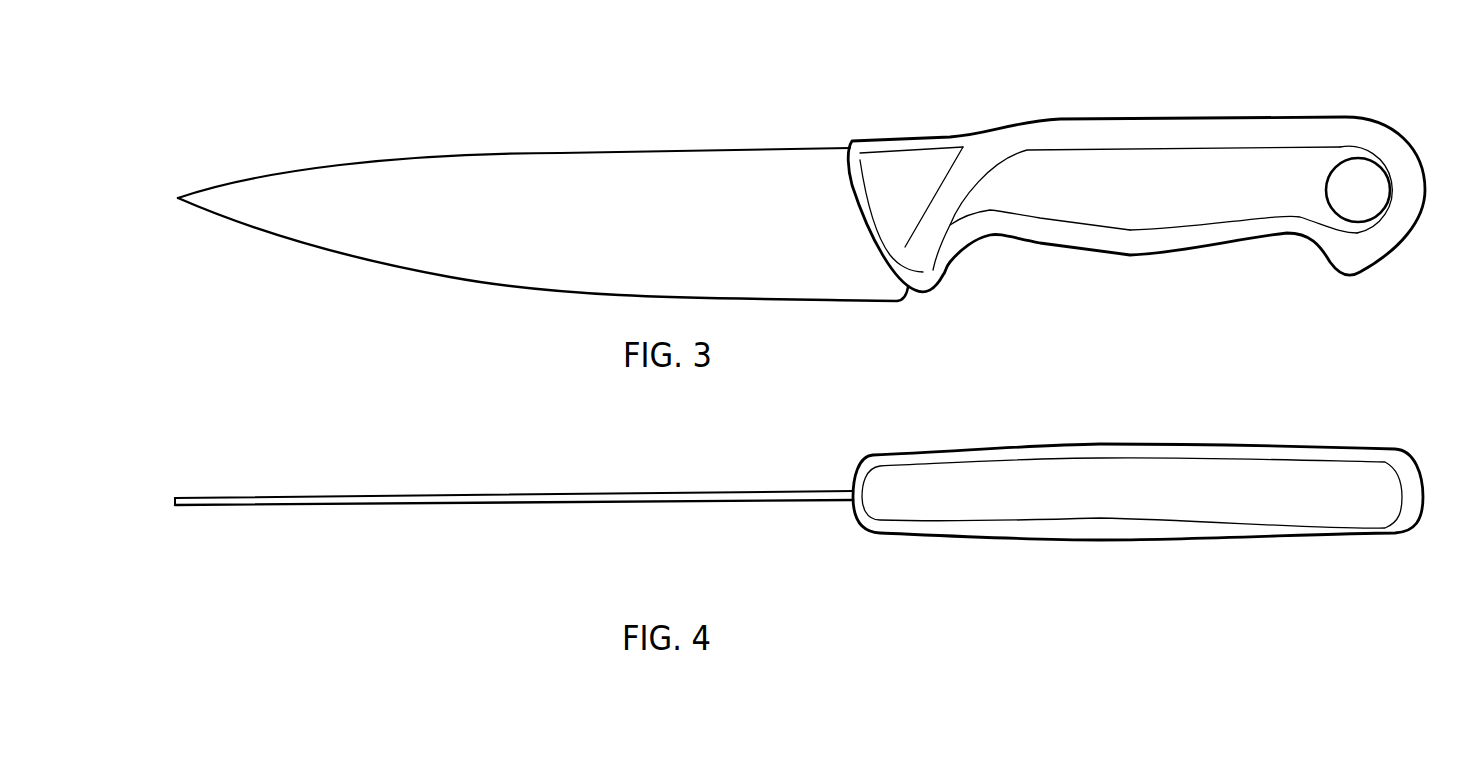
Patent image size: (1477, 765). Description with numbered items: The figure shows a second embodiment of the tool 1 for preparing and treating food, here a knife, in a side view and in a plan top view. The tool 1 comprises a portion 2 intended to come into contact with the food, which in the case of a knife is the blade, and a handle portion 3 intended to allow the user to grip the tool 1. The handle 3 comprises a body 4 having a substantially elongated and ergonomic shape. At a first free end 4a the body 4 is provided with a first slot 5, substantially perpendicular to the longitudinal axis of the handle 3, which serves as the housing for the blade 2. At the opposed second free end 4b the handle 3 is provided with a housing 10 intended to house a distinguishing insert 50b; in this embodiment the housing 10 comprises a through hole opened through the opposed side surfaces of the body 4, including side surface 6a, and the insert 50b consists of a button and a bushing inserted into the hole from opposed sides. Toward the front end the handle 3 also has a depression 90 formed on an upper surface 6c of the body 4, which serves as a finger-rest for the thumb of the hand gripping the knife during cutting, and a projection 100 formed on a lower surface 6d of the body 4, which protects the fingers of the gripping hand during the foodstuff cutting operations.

In FIG. 3, the tool 1 is at (730, 108).
In FIG. 4, the tool 1 is at (750, 548).
In FIG. 3, the portion intended to come into contact with the food 2 is at (580, 183).
In FIG. 4, the portion intended to come into contact with the food 2 is at (535, 490).
In FIG. 3, the handle portion 3 is at (1152, 113).
In FIG. 4, the handle portion 3 is at (1143, 441).
In FIG. 3, the body 4 is at (1046, 121).
In FIG. 4, the body 4 is at (1065, 463).
In FIG. 3, the first free end 4a is at (843, 136).
In FIG. 4, the first free end 4a is at (833, 473).
In FIG. 3, the second free end 4b is at (1386, 116).
In FIG. 4, the second free end 4b is at (1400, 445).
In FIG. 3, the first slot 5 is at (910, 292).
In FIG. 4, the first slot 5 is at (845, 508).
In FIG. 3, the side surface / first free end 6a is at (1100, 134).
In FIG. 3, the upper surface 6c is at (1281, 115).
In FIG. 4, the upper surface 6c is at (1252, 492).
In FIG. 3, the lower surface 6d is at (1175, 258).
In FIG. 3, the housing 10 is at (1368, 233).
In FIG. 3, the distinguishing insert 50b is at (1383, 207).
In FIG. 4, the distinguishing insert 50b is at (1375, 535).
In FIG. 3, the depression 90 is at (918, 139).
In FIG. 4, the depression 90 is at (895, 498).
In FIG. 3, the projection 100 is at (952, 272).